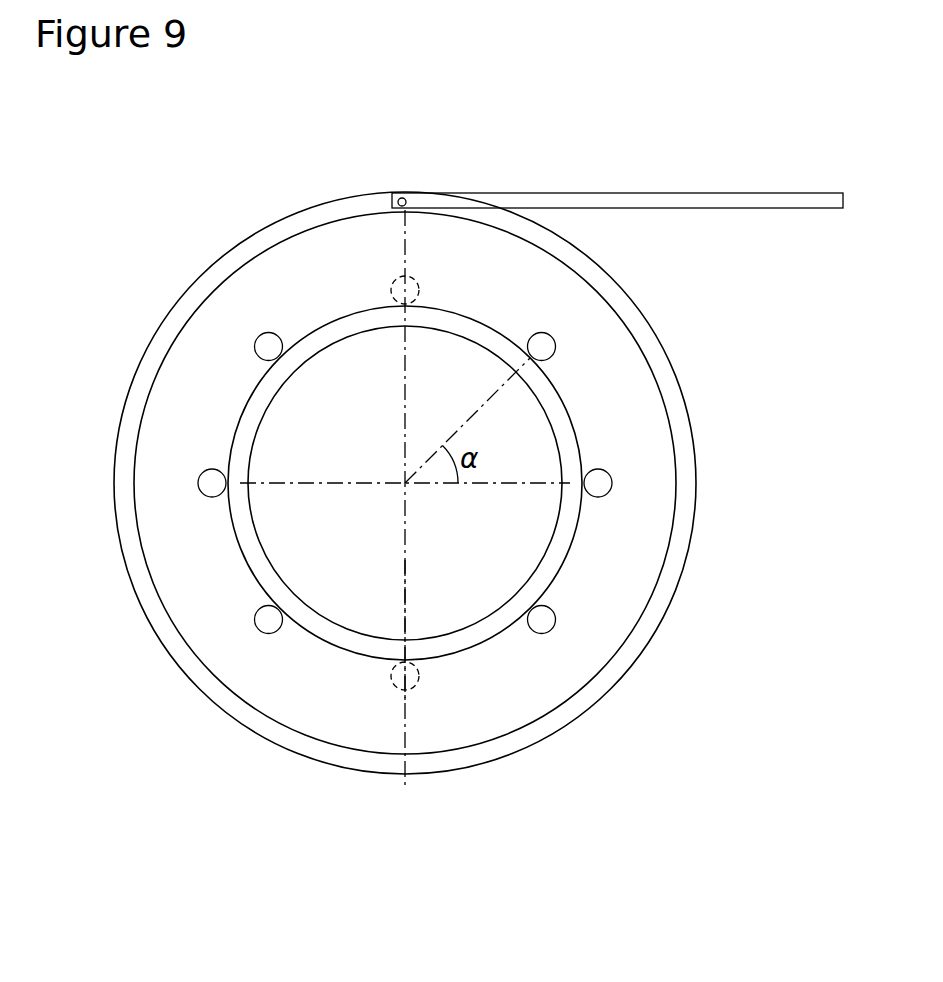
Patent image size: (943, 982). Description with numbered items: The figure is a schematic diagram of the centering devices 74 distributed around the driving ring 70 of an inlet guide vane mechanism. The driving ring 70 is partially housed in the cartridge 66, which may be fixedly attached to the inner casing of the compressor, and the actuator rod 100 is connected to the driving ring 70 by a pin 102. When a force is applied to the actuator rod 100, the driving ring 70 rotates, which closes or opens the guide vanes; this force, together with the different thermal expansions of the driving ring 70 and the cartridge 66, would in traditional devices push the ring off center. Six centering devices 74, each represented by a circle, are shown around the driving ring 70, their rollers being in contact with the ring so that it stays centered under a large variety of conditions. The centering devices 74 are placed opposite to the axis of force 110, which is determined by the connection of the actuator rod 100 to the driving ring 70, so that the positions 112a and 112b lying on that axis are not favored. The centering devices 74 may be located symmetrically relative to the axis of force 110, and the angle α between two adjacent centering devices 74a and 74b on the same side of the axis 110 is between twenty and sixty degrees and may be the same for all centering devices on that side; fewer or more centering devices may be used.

The cartridge 66 is at (673, 397).
The driving ring 70 is at (503, 620).
The centering devices 74 is at (262, 333).
The centering device 74a is at (552, 333).
The centering device 74b is at (612, 482).
The actuator rod 100 is at (663, 193).
The pin 102 is at (403, 197).
The axis of force 110 is at (405, 567).
The position 112a is at (395, 686).
The position 112b is at (416, 284).